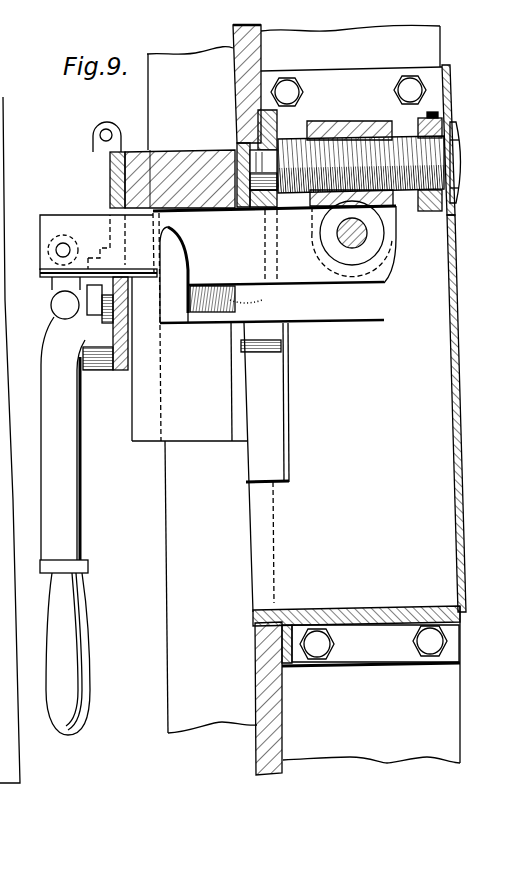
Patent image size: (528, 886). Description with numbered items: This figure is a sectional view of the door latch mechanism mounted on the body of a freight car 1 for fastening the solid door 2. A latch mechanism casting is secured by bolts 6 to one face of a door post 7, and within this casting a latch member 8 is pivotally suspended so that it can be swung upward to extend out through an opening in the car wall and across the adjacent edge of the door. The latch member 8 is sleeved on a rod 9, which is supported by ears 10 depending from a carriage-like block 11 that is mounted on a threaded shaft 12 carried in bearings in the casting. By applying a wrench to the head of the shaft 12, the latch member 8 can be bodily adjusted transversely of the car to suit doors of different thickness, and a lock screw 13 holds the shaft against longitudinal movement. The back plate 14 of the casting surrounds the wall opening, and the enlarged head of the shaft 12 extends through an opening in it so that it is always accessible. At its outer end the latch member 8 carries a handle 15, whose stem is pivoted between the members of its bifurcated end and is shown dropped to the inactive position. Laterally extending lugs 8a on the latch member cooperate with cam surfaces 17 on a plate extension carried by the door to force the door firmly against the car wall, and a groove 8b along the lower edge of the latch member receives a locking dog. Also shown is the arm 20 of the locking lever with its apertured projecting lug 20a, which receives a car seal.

The body of a freight car 1 is at (242, 33).
The solid door 2 is at (202, 390).
The bolts 6 is at (417, 87).
The door post 7 is at (356, 394).
The latch member 8 is at (274, 264).
The laterally extending lug 8a is at (175, 298).
The groove 8b is at (372, 297).
The rod 9 is at (364, 245).
The ears 10 is at (389, 231).
The carriage-like block 11 is at (341, 121).
The threaded shaft 12 is at (425, 150).
The lock screw 13 is at (445, 113).
The back plate 14 is at (456, 322).
The handle 15 is at (102, 293).
The cam surfaces 17 is at (238, 322).
The arm of the lever 20 is at (110, 197).
The projecting lug 20a is at (117, 110).